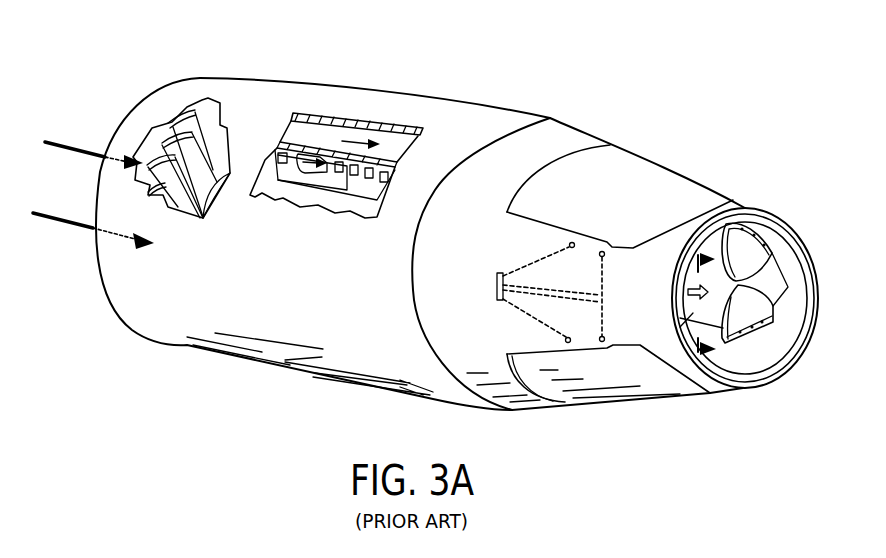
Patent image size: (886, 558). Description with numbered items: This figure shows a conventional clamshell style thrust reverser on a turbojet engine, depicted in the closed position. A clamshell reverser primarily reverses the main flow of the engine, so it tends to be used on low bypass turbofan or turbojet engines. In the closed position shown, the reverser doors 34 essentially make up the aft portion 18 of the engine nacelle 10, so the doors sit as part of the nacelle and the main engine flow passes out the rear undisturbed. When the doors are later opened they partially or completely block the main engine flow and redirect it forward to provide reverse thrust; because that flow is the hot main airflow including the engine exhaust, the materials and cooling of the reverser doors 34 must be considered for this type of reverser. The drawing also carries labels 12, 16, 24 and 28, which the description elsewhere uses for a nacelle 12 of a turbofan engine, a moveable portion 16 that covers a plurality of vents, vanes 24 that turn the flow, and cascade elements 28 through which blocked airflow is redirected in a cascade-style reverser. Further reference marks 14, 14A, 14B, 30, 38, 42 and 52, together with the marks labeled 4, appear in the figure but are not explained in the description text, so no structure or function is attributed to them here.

The engine nacelle 10 is at (412, 88).
The nacelle 12 is at (213, 142).
The airflow 14 is at (686, 290).
The inlet airflow 14A is at (66, 140).
The bypass airflow 14B is at (308, 167).
The moveable portion 16 is at (342, 214).
The aft portion 18 is at (574, 118).
The vanes 24 is at (456, 293).
The cascade elements 28 is at (783, 320).
The core nozzle 30 is at (723, 325).
The reverser doors 34 is at (626, 193).
The beam 38 is at (542, 283).
The nozzle flap 42 is at (750, 258).
The strut 52 is at (523, 265).
The section line FIG. 4 is at (709, 311).